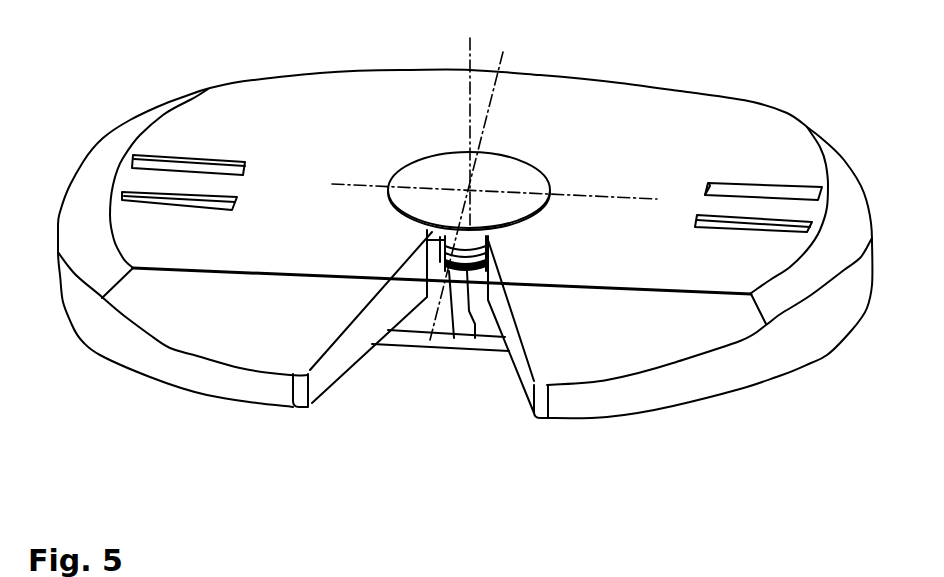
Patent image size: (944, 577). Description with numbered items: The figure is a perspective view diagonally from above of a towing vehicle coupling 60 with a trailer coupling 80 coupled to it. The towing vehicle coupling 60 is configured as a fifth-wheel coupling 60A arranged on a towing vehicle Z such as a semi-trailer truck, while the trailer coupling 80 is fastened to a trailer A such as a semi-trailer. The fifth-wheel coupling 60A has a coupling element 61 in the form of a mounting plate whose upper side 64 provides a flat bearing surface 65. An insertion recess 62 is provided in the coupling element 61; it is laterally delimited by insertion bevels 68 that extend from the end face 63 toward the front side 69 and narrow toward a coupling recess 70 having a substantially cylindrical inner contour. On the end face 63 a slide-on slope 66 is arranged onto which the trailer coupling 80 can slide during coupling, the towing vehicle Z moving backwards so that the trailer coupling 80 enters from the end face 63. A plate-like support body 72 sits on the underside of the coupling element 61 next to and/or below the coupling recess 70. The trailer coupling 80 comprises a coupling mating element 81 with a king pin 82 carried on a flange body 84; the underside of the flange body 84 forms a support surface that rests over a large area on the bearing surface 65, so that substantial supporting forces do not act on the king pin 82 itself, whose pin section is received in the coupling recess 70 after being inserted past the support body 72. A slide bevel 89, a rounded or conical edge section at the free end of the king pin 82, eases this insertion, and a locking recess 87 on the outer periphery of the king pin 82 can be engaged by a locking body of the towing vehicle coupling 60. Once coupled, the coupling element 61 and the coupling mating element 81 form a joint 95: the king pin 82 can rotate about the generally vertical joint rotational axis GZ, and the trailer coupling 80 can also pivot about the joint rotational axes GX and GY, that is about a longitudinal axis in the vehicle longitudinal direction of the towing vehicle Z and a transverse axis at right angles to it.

The towing vehicle coupling 60 is at (466, 255).
The fifth-wheel coupling 60A is at (784, 139).
The coupling element 61 is at (680, 98).
The insertion recess 62 is at (422, 384).
The end face 63 is at (267, 393).
The upper side 64 is at (270, 123).
The bearing surface 65 is at (370, 120).
The slide-on slope 66 is at (170, 312).
The insertion bevels 68 is at (352, 353).
The front side 69 is at (623, 85).
The coupling recess 70 is at (443, 243).
The support body 72 is at (407, 342).
The trailer coupling 80 is at (442, 138).
The coupling mating element 81 is at (506, 155).
The king pin 82 is at (430, 235).
The flange body 84 is at (550, 178).
The locking recess 87 is at (480, 241).
The slide bevel 89 is at (462, 270).
The joint 95 is at (570, 200).
The towing vehicle Z is at (202, 90).
The trailer A is at (488, 144).
The joint rotational axis GZ is at (464, 62).
The joint rotational axis GX is at (510, 50).
The joint rotational axis GY is at (648, 188).